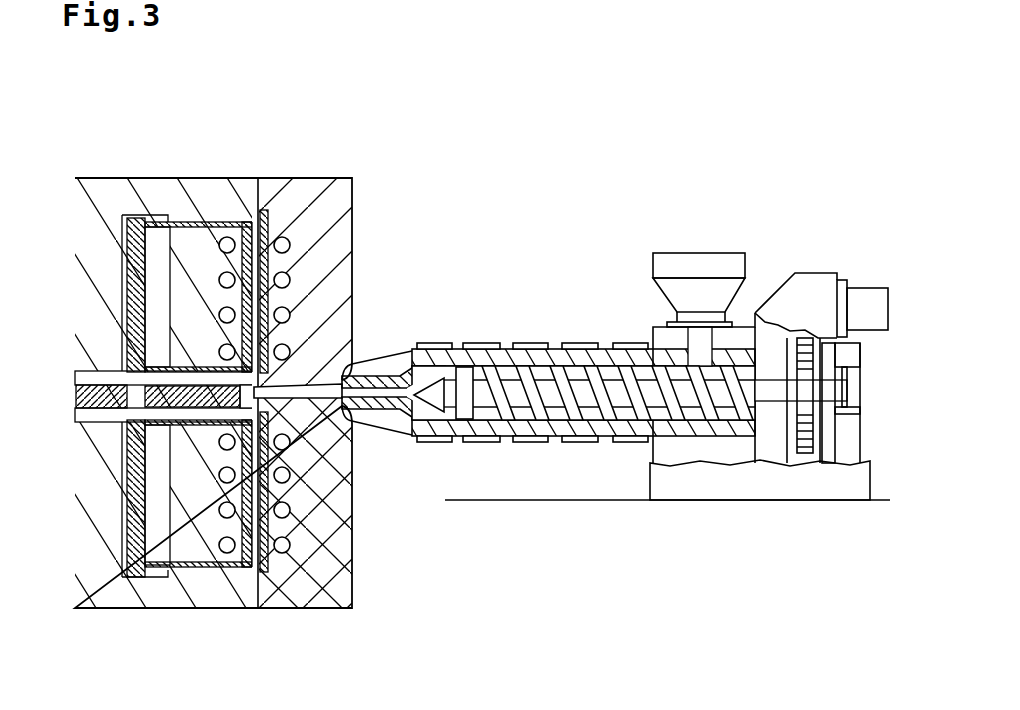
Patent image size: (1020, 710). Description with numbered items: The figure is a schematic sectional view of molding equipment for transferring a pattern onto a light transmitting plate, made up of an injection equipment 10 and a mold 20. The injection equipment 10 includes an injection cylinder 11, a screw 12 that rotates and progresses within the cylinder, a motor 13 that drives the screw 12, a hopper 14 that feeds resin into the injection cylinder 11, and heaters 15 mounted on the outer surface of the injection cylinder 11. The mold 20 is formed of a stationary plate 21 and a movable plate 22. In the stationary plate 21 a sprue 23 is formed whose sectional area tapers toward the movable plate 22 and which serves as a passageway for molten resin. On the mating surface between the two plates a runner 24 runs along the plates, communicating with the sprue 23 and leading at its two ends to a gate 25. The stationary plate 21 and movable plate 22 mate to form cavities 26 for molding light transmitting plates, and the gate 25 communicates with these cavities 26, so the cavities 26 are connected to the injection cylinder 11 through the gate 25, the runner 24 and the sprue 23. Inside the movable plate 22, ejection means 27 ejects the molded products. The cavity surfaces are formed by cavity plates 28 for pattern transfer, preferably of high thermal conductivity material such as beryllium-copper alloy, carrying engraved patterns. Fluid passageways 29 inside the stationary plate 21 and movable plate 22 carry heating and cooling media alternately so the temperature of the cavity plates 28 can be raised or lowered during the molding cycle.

The injection equipment 10 is at (633, 218).
The injection cylinder 11 is at (410, 356).
The screw 12 is at (522, 395).
The motor 13 is at (805, 312).
The hopper 14 is at (703, 268).
The heaters 15 is at (580, 342).
The mold 20 is at (143, 143).
The stationary plate 21 is at (322, 225).
The movable plate 22 is at (103, 227).
The sprue 23 is at (352, 472).
The runner 24 is at (343, 528).
The gate 25 is at (352, 285).
The cavities 26 is at (253, 280).
The ejection means 27 is at (78, 592).
The cavity plates 28 is at (222, 530).
The fluid passageways 29 is at (227, 237).